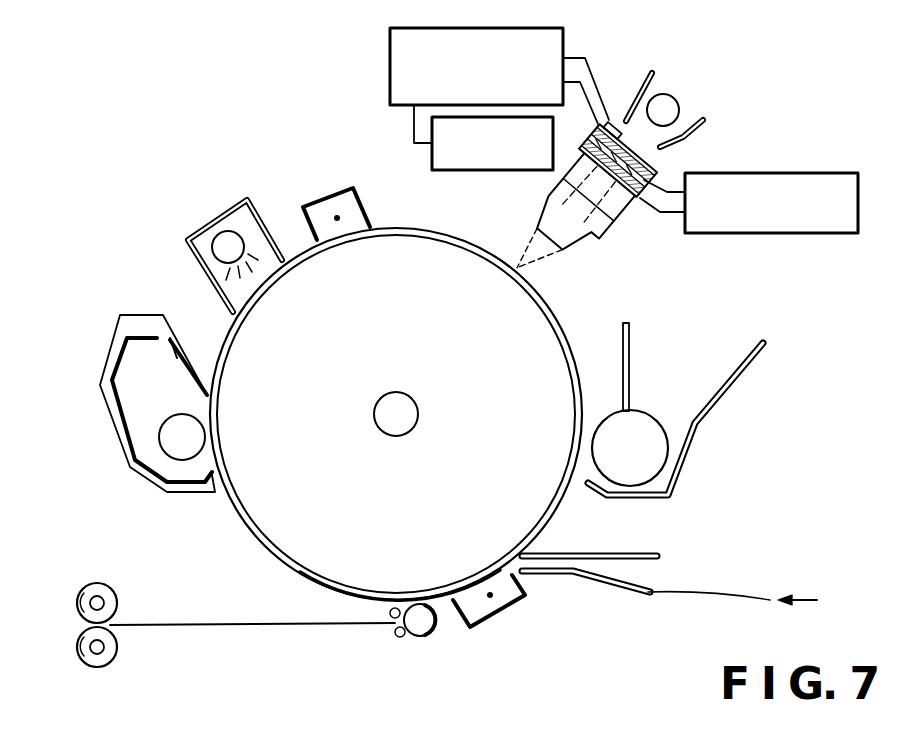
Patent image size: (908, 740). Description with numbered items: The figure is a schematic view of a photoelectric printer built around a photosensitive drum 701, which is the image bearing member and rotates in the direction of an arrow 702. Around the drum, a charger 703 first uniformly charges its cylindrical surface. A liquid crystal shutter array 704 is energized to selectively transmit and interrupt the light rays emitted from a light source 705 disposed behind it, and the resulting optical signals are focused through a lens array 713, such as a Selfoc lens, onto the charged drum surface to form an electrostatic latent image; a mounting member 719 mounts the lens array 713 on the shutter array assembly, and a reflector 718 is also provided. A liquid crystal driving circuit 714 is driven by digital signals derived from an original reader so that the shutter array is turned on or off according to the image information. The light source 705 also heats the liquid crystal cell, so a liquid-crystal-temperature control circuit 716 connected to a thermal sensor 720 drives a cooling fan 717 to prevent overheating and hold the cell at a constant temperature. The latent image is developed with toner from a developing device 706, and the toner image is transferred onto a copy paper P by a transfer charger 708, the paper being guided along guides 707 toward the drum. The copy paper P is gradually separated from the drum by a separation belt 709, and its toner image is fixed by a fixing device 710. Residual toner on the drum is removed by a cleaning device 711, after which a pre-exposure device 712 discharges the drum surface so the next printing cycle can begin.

The photosensitive drum 701 is at (267, 545).
The arrow 702 is at (508, 335).
The charger 703 is at (323, 197).
The liquid crystal shutter array 704 is at (645, 212).
The light source 705 is at (680, 102).
The developing device 706 is at (713, 407).
The paper guide 707 is at (570, 555).
The transfer charger 708 is at (508, 608).
The separation belt 709 is at (440, 603).
The fixing device 710 is at (110, 584).
The cleaning device 711 is at (120, 445).
The pre-exposure device 712 is at (218, 215).
The lens array 713 is at (575, 242).
The liquid crystal driving circuit 714 is at (785, 233).
The liquid-crystal-temperature control circuit 716 is at (388, 72).
The cooling fan 717 is at (470, 172).
The reflector 718 is at (705, 120).
The mounting member 719 is at (608, 217).
The thermal sensor 720 is at (613, 118).
The copy paper P is at (715, 592).